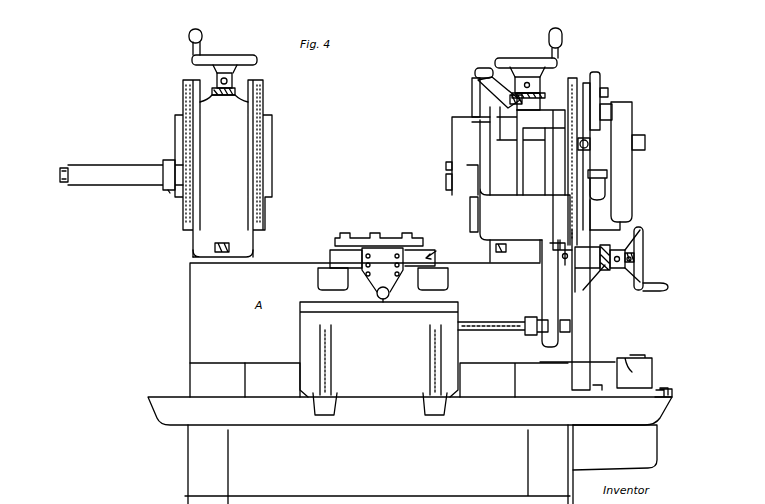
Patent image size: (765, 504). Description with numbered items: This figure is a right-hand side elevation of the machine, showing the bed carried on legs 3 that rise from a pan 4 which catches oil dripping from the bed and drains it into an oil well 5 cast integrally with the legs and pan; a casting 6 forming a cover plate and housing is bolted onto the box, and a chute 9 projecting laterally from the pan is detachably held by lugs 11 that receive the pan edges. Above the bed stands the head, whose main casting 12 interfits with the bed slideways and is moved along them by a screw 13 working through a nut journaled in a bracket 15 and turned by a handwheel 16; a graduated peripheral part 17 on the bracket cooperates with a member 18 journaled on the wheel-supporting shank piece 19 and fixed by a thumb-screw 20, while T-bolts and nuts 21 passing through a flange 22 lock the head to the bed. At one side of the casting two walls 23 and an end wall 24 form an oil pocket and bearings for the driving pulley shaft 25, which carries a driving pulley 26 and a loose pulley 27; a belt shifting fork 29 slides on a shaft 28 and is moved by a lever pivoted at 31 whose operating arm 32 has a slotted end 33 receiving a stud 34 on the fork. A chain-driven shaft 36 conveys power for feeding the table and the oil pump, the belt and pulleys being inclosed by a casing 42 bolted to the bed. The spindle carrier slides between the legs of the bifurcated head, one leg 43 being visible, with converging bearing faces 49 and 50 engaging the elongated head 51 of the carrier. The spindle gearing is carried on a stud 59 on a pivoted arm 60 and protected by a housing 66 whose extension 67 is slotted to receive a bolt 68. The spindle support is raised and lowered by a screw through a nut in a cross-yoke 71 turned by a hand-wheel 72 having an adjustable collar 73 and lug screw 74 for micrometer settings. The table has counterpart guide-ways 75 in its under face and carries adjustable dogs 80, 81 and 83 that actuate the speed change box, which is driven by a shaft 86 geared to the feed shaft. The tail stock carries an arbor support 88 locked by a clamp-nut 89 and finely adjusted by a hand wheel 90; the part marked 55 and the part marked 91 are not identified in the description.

The legs 3 is at (379, 380).
The pan 4 is at (265, 397).
The oil well 5 is at (652, 440).
The casting 6 is at (668, 394).
The chute 9 is at (379, 349).
The lugs 11 is at (315, 408).
The main casting 12 is at (466, 256).
The screw 13 is at (648, 253).
The bracket 15 is at (588, 250).
The handwheel 16 is at (645, 273).
The peripheral part 17 is at (608, 248).
The member 18 is at (608, 273).
The shank piece 19 is at (568, 197).
The thumb-screw 20 is at (617, 266).
The T-bolts and nuts 21 is at (501, 247).
The flange 22 is at (531, 262).
The walls 23 is at (513, 170).
The end wall 24 is at (490, 205).
The driving pulley shaft 25 is at (446, 180).
The driving pulley 26 is at (534, 161).
The loose pulley 27 is at (508, 165).
The shaft 28 is at (503, 151).
The belt shifting fork 29 is at (541, 152).
The pivot 31 is at (486, 70).
The operating arm 32 is at (472, 95).
The slotted end 33 is at (530, 102).
The stud 34 is at (512, 94).
The shaft 36 is at (494, 322).
The casing 42 is at (591, 325).
The leg 43 is at (573, 82).
The bearing faces 49 is at (470, 223).
The bearing faces 50 is at (578, 225).
The head 51 is at (455, 138).
The adjusting screw 55 is at (446, 165).
The stud 59 is at (646, 145).
The arm 60 is at (599, 184).
The housing 66 is at (628, 124).
The extension 67 is at (604, 69).
The bolt 68 is at (608, 92).
The cross-yoke 71 is at (633, 104).
The hand-wheel 72 is at (528, 58).
The adjustable collar 73 is at (538, 97).
The lug screw 74 is at (531, 86).
The guide-ways 75 is at (383, 279).
The dog 80 is at (332, 246).
The dog 81 is at (326, 259).
The dog 83 is at (273, 168).
The shaft 86 is at (383, 304).
The arbor support 88 is at (145, 165).
The clamp-nut 89 is at (169, 193).
The hand wheel 90 is at (231, 59).
The shaft nut 91 is at (65, 167).